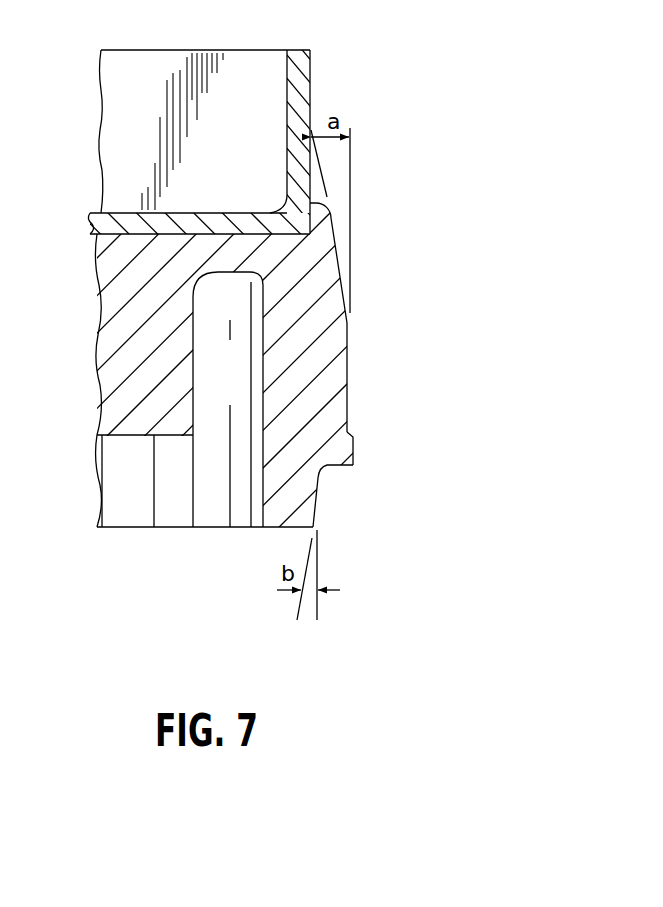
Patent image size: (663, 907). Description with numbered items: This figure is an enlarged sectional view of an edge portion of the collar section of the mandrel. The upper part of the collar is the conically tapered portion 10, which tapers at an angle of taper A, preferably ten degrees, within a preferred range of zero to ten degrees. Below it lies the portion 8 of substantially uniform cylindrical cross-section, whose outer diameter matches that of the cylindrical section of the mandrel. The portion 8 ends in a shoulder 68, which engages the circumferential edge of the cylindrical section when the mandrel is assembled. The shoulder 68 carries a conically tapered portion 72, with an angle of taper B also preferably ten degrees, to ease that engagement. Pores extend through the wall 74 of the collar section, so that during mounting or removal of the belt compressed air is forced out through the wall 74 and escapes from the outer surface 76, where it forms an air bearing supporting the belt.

The portion of uniform circular cross-section 8 is at (347, 403).
The conically tapered portion 10 is at (335, 262).
The outer surface 76 is at (347, 345).
The shoulder 68 is at (325, 470).
The conically tapered portion of shoulder 72 is at (313, 519).
The wall 74 is at (280, 327).